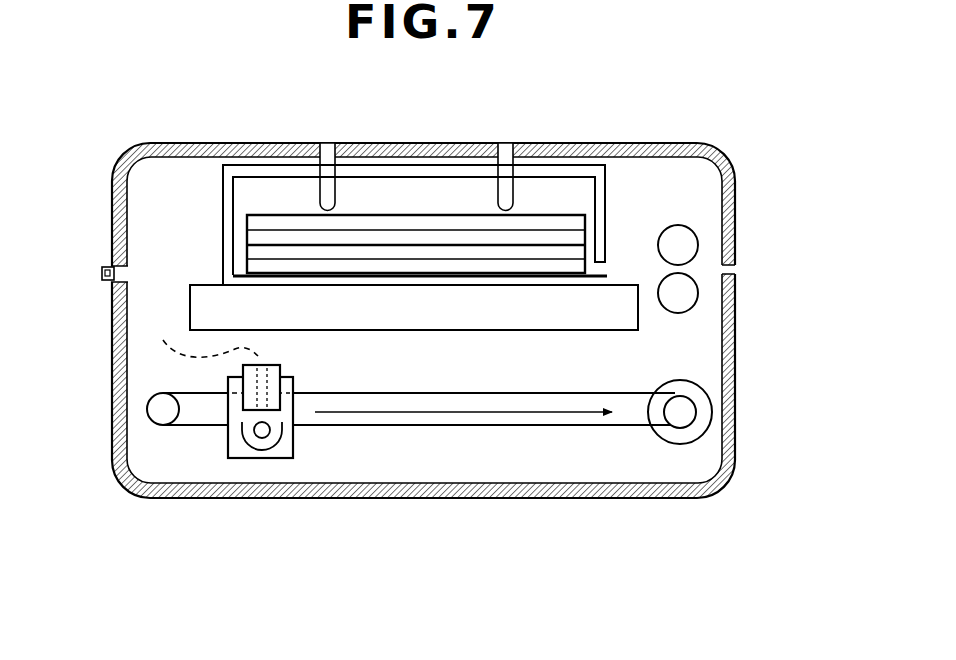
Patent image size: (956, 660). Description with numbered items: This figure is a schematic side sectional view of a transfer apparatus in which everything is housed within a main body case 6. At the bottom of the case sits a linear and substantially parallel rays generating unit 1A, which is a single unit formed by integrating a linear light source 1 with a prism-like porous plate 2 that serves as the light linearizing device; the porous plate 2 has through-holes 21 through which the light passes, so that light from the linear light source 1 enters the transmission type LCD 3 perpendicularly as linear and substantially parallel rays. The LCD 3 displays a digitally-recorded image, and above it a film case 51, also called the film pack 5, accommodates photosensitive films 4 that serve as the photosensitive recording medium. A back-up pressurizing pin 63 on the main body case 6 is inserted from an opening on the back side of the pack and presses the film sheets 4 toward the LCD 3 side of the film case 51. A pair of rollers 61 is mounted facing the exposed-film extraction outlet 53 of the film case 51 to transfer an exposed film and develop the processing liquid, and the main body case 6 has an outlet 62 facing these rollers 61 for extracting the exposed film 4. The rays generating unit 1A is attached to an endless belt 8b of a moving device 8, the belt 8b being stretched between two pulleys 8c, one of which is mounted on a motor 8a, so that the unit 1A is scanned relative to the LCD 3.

The main body case 6 is at (183, 143).
The back-up pressurizing pin 63 is at (332, 202).
The film case 51 is at (605, 187).
The exposed-film extraction outlet 53 is at (603, 268).
The film pack 5 is at (336, 223).
The photosensitive film 4 is at (280, 266).
The liquid crystal display device (LCD) 3 is at (643, 315).
The pair of rollers 61 is at (683, 240).
The outlet 62 is at (737, 270).
The moving device 8 is at (430, 445).
The endless belt 8b is at (193, 393).
The pulley 8c is at (148, 410).
The motor 8a is at (692, 418).
The linear and substantially parallel rays generating unit 1A is at (248, 433).
The linear light source 1 is at (285, 438).
The porous plate 2 is at (280, 366).
The through-hole 21 is at (200, 328).